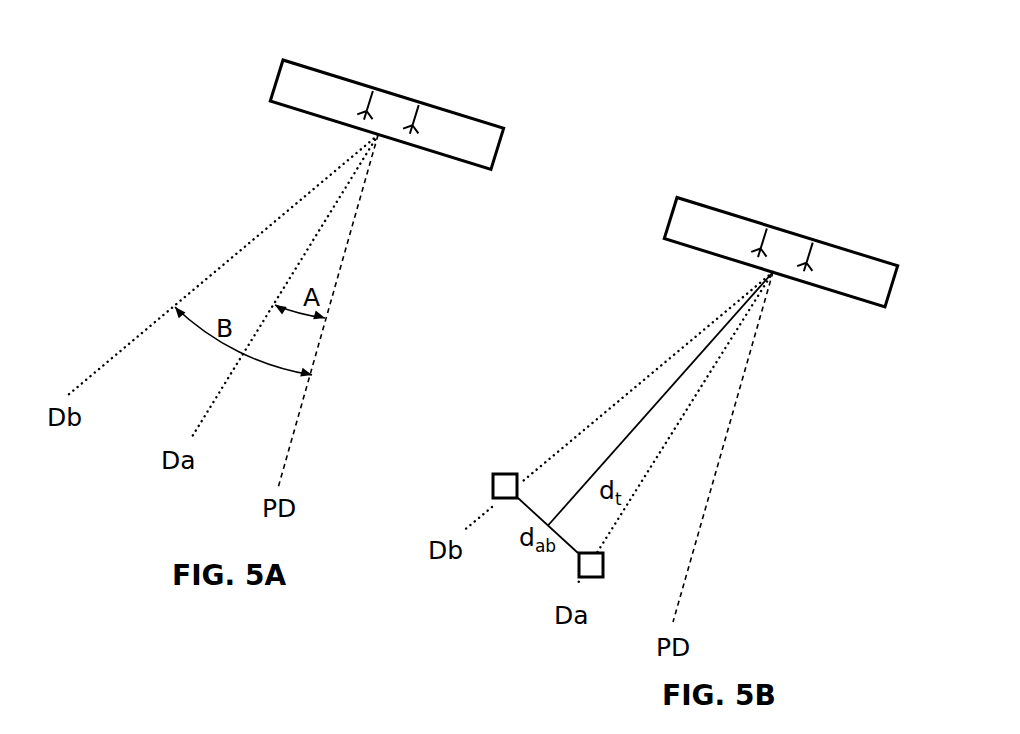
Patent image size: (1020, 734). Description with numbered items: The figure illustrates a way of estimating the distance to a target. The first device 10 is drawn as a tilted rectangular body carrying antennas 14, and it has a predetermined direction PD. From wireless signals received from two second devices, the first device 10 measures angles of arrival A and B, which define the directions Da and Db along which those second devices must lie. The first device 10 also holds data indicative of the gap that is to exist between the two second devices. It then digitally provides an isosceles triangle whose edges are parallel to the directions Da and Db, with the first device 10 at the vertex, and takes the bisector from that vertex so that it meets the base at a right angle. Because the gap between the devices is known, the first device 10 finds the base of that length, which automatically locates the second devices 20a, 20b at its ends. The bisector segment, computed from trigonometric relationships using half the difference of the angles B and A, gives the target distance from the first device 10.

In FIG. 5A, the first device 10 is at (287, 85).
In FIG. 5B, the first device 10 is at (681, 222).
In FIG. 5A, the antennas 14 is at (416, 90).
In FIG. 5B, the antennas 14 is at (809, 227).
In FIG. 5B, the second device 20a is at (592, 563).
In FIG. 5B, the second device 20b is at (502, 483).